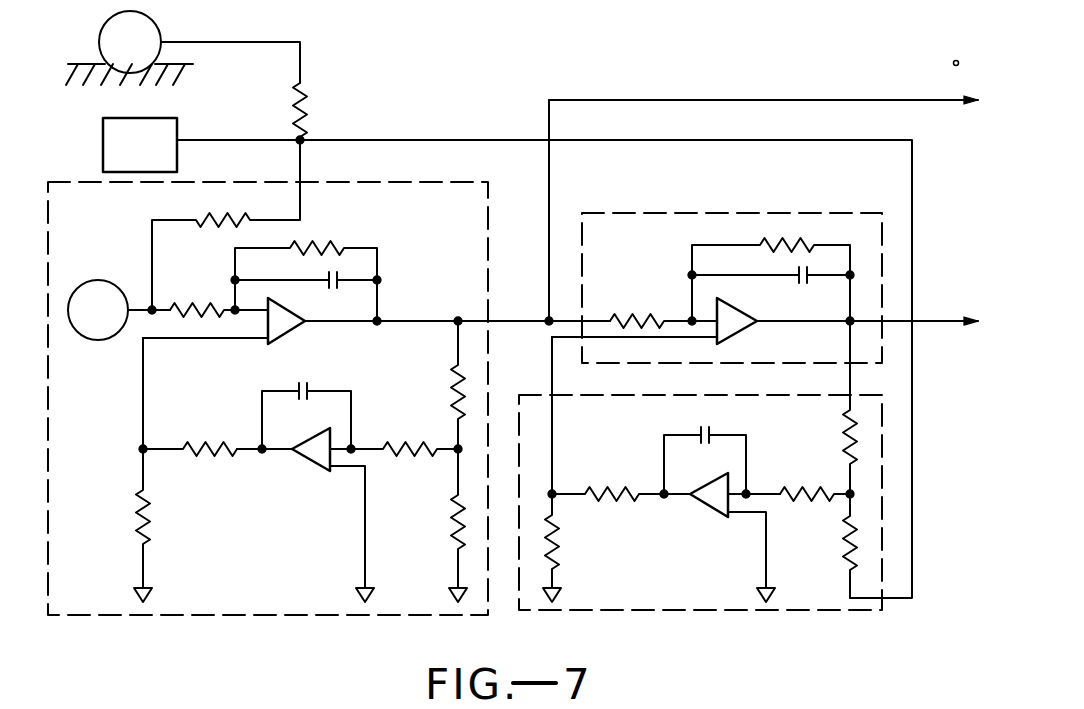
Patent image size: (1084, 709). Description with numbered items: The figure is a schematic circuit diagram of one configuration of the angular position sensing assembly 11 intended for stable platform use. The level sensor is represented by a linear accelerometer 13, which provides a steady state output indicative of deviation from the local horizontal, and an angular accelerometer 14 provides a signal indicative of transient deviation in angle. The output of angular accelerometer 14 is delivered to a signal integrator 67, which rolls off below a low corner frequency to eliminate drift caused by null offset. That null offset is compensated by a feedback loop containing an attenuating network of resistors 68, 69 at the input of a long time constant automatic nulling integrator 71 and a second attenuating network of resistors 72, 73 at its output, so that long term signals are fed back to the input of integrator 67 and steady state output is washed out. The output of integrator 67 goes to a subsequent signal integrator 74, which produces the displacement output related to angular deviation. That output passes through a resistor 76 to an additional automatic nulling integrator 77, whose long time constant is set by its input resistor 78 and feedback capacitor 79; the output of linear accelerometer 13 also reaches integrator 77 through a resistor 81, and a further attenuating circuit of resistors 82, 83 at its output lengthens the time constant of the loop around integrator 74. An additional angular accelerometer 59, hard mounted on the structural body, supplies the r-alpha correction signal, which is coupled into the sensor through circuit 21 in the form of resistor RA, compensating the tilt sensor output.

The angular position sensing assembly 11 is at (487, 112).
The linear accelerometer 13 is at (165, 118).
The angular accelerometer 14 is at (98, 280).
The circuit 21 is at (295, 107).
The additional angular accelerometer 59 is at (162, 32).
The signal integrator 67 is at (387, 260).
The resistor 68 is at (450, 385).
The resistor 69 is at (451, 516).
The automatic nulling integrator 71 is at (247, 403).
The resistor 72 is at (222, 457).
The resistor 73 is at (155, 519).
The subsequent signal integrator 74 is at (668, 278).
The resistor 76 is at (843, 442).
The additional automatic nulling integrator 77 is at (642, 460).
The input resistor 78 is at (812, 488).
The feedback capacitor 79 is at (697, 430).
The resistor 81 is at (845, 540).
The resistor 82 is at (597, 487).
The resistor 83 is at (555, 547).